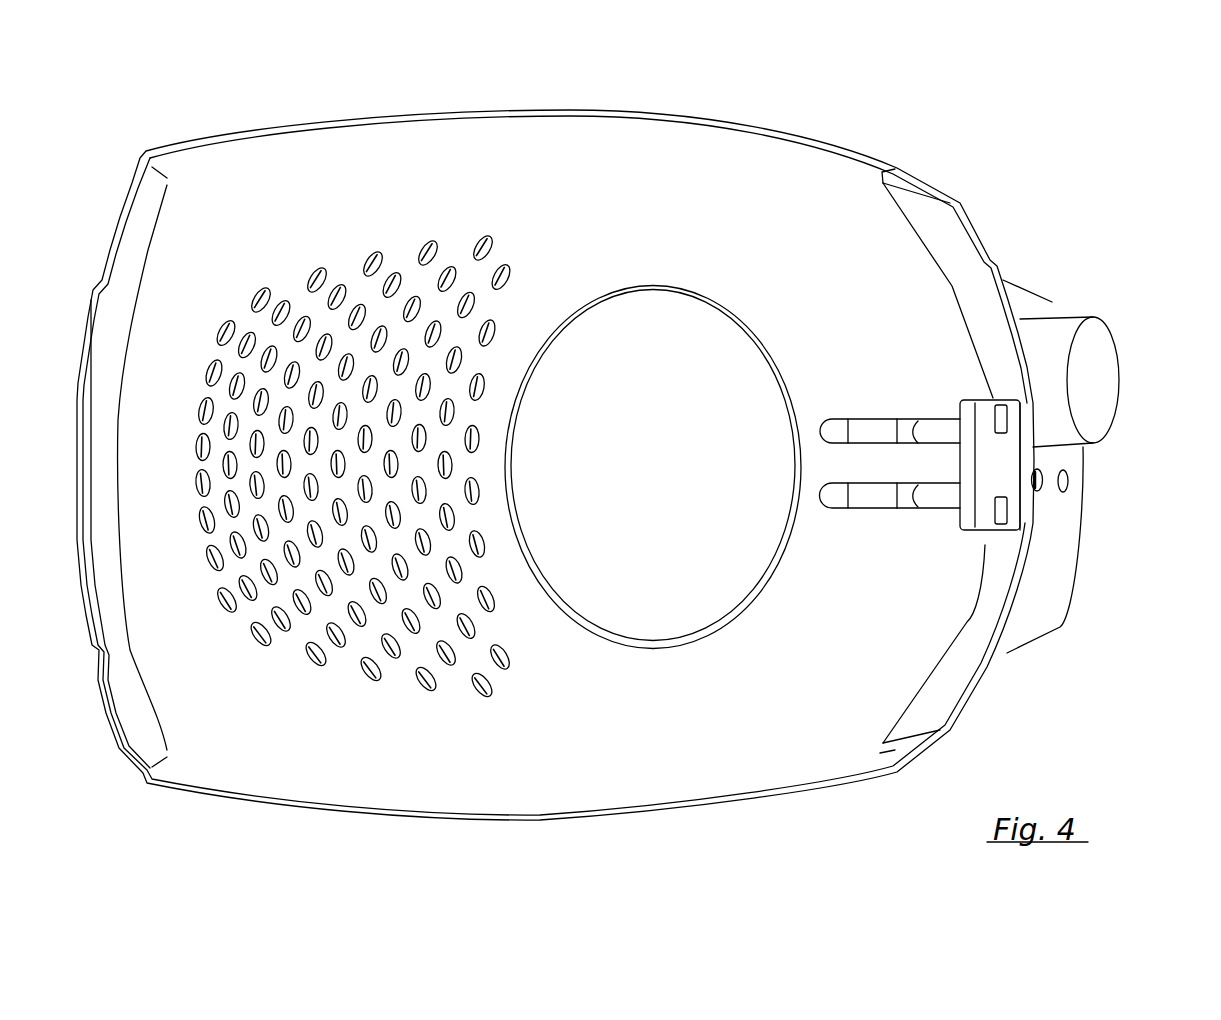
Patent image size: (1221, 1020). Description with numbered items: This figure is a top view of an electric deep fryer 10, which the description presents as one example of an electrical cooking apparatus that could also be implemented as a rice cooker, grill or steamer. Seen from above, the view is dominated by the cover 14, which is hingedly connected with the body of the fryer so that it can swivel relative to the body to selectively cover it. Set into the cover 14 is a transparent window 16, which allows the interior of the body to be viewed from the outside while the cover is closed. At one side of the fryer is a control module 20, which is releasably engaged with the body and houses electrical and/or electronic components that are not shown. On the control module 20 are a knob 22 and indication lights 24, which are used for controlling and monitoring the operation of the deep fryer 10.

The deep fryer 10 is at (642, 469).
The cover 14 is at (333, 790).
The transparent window 16 is at (656, 355).
The control module 20 is at (1050, 583).
The knob 22 is at (1098, 378).
The indication lights 24 is at (1070, 481).